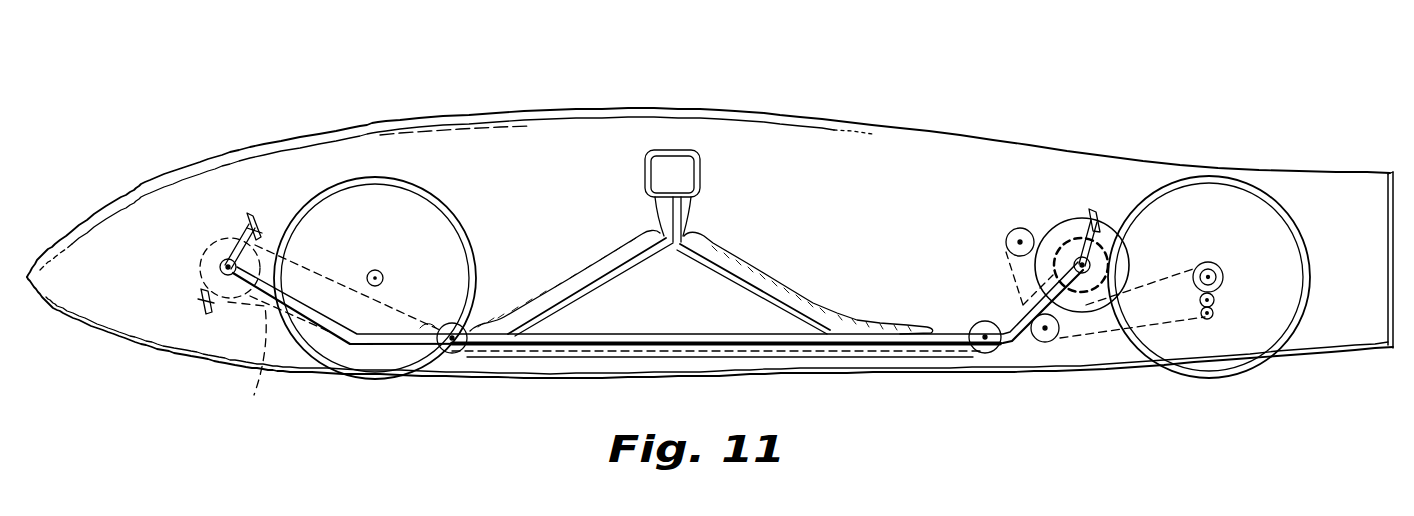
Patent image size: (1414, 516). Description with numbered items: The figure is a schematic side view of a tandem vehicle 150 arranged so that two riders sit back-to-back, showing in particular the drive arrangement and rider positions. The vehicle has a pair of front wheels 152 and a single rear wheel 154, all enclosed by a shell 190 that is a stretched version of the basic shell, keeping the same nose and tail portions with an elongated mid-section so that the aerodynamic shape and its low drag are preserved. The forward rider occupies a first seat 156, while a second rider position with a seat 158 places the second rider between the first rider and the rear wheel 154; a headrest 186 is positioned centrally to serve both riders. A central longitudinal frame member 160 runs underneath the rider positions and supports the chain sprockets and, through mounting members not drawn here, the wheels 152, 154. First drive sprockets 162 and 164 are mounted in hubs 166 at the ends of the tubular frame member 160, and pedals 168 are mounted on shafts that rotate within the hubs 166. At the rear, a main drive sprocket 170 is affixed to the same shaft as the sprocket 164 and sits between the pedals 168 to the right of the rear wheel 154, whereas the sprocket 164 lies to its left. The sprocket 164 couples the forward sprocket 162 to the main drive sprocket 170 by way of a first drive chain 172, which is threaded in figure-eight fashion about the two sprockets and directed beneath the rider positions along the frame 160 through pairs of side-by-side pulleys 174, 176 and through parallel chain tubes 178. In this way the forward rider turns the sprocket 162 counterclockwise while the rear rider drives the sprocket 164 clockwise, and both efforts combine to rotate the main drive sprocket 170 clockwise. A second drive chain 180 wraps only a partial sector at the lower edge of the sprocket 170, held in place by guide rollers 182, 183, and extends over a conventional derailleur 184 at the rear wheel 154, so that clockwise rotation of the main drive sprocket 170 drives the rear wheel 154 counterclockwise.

The vehicle 150 is at (1213, 32).
The front wheels 152 is at (400, 178).
The rear wheel 154 is at (1245, 180).
The first seat 156 is at (592, 270).
The seat 158 is at (745, 272).
The central longitudinal frame member 160 is at (598, 335).
The first drive sprocket 162 is at (212, 240).
The first drive sprocket 164 is at (1118, 228).
The hubs 166 is at (222, 267).
The pedals 168 is at (250, 213).
The main drive sprocket 170 is at (1075, 200).
The first drive chain 172 is at (265, 360).
The side-by-side pulleys 174 is at (452, 353).
The side-by-side pulleys 176 is at (985, 353).
The parallel chain tubes 178 is at (862, 352).
The second drive chain 180 is at (1172, 325).
The guide roller 182 is at (1010, 230).
The guide roller 183 is at (1040, 343).
The derailleur 184 is at (1225, 270).
The headrest 186 is at (666, 150).
The shell 190 is at (404, 114).